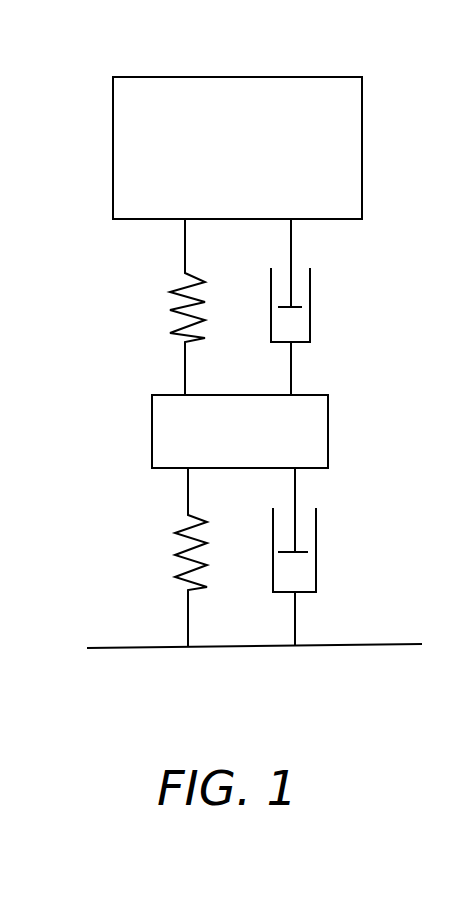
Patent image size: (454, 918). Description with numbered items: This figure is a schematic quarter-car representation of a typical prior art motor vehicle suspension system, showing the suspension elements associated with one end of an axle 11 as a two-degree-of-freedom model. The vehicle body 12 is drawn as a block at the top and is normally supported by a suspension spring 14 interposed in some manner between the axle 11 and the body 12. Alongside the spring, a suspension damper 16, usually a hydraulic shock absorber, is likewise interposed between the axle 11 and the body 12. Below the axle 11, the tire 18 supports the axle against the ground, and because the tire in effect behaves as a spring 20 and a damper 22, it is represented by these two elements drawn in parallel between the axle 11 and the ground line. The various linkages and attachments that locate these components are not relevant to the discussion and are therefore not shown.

The axle 11 is at (328, 430).
The vehicle body 12 is at (363, 122).
The suspension spring 14 is at (171, 306).
The suspension damper 16 is at (310, 279).
The tire 18 is at (322, 486).
The spring 20 is at (175, 553).
The damper 22 is at (316, 537).